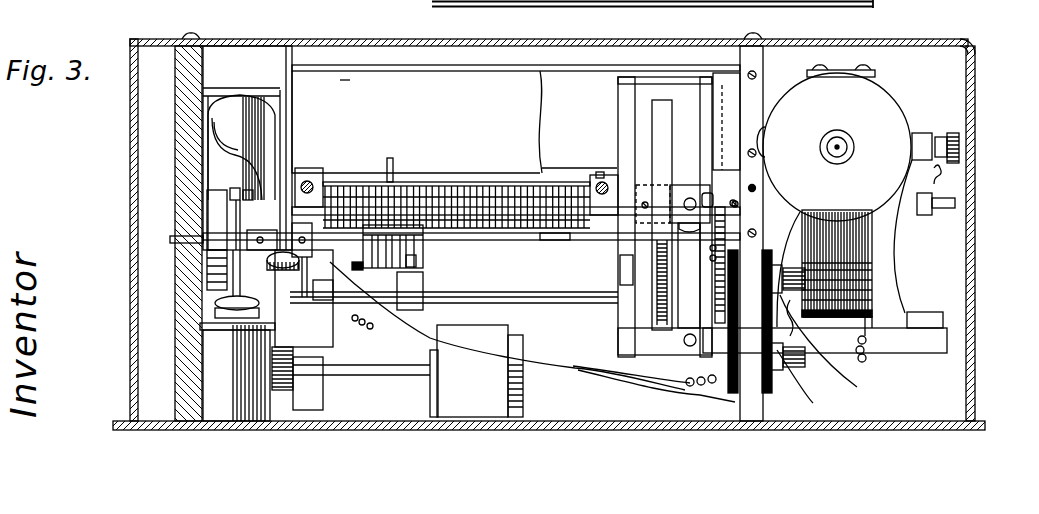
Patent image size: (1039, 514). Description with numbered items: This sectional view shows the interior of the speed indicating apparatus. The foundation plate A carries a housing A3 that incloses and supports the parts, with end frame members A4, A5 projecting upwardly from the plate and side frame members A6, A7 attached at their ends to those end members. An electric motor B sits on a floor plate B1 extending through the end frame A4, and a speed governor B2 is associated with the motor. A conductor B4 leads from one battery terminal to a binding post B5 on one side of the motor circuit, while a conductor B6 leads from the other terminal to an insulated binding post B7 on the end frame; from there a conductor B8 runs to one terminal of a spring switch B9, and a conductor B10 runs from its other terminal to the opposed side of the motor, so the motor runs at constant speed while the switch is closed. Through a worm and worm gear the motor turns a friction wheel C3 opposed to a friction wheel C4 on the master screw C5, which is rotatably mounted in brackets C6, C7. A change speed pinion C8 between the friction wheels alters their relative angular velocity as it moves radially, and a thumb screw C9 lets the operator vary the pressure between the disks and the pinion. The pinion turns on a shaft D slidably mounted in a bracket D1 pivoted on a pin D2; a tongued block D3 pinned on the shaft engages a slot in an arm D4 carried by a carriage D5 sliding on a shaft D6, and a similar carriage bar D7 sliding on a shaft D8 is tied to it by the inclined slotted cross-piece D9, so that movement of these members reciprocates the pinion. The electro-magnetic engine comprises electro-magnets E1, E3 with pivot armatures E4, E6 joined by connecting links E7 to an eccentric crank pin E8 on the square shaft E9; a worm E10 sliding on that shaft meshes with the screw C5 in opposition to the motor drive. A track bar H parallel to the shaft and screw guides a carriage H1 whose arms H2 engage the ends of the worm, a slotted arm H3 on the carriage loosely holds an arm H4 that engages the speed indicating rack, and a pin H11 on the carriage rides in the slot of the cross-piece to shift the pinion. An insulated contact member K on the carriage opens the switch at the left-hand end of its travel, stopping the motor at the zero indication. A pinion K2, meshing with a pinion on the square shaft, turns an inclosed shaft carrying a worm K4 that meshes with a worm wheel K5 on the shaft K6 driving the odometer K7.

The foundation plate A is at (226, 424).
The housing A3 is at (976, 92).
The end frame member A4 is at (746, 392).
The end frame member A5 is at (176, 288).
The side frame member A6 is at (346, 80).
The side frame member A7 is at (597, 70).
The electric motor B is at (882, 265).
The floor plate B1 is at (930, 340).
The speed governor B2 is at (886, 120).
The conductor B4 is at (852, 395).
The binding post B5 is at (878, 280).
The conductor B6 is at (797, 408).
The insulated binding post B7 is at (805, 392).
The conductor B8 is at (556, 368).
The spring switch B9 is at (300, 276).
The conductor B10 is at (585, 372).
The friction wheel C3 is at (722, 238).
The friction wheel C4 is at (664, 115).
The master screw C5 is at (470, 184).
The bracket C6 is at (626, 268).
The bracket C7 is at (290, 125).
The change speed pinion C8 is at (740, 202).
The thumb screw C9 is at (948, 200).
The shaft D is at (690, 198).
The bracket D1 is at (690, 312).
The pin D2 is at (682, 348).
The tongued block D3 is at (672, 196).
The arm D4 is at (721, 128).
The carriage D5 is at (600, 172).
The shaft D6 is at (597, 180).
The carriage bar D7 is at (320, 184).
The shaft D8 is at (308, 176).
The inclined slotted cross-piece D9 is at (510, 184).
The electro-magnet E1 is at (217, 116).
The electro-magnet E3 is at (222, 377).
The pivot armature E4 is at (230, 160).
The pivot armature E6 is at (222, 316).
The connecting link E7 is at (247, 213).
The eccentric crank pin E8 is at (205, 228).
The square shaft E9 is at (556, 242).
The worm E10 is at (420, 262).
The track bar H is at (560, 304).
The carriage H1 is at (420, 300).
The arm H2 is at (300, 232).
The slotted arm H3 is at (407, 312).
The arm H4 is at (424, 308).
The pin H11 is at (394, 166).
The insulated contact member K is at (356, 292).
The pinion K2 is at (281, 272).
The worm K4 is at (268, 357).
The worm wheel K5 is at (283, 391).
The shaft K6 is at (386, 372).
The odometer K7 is at (478, 387).